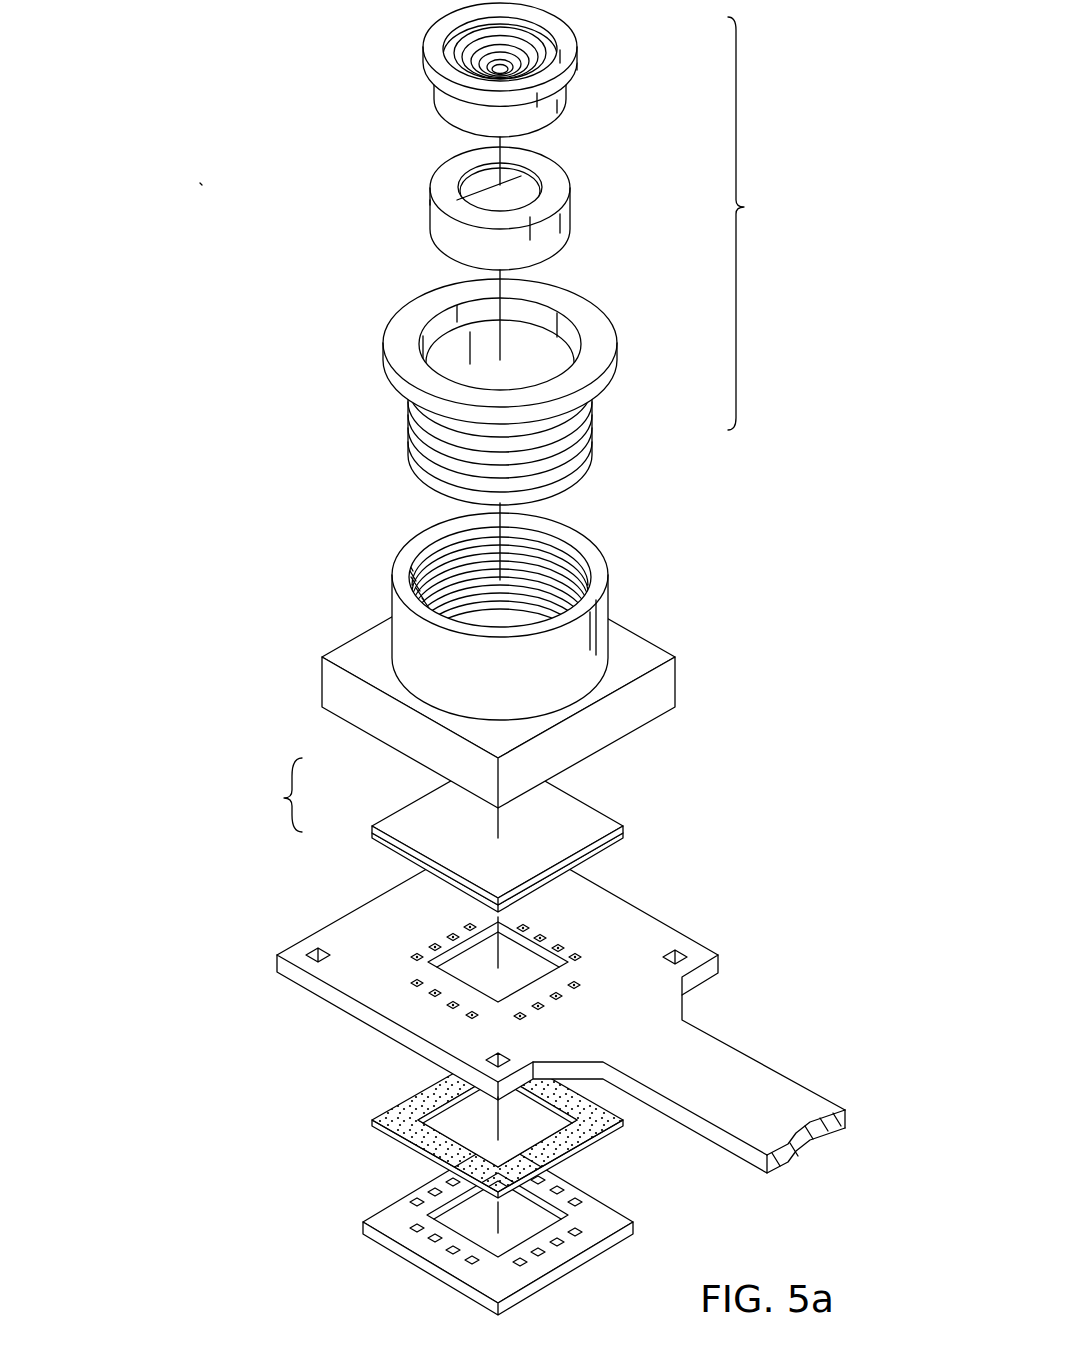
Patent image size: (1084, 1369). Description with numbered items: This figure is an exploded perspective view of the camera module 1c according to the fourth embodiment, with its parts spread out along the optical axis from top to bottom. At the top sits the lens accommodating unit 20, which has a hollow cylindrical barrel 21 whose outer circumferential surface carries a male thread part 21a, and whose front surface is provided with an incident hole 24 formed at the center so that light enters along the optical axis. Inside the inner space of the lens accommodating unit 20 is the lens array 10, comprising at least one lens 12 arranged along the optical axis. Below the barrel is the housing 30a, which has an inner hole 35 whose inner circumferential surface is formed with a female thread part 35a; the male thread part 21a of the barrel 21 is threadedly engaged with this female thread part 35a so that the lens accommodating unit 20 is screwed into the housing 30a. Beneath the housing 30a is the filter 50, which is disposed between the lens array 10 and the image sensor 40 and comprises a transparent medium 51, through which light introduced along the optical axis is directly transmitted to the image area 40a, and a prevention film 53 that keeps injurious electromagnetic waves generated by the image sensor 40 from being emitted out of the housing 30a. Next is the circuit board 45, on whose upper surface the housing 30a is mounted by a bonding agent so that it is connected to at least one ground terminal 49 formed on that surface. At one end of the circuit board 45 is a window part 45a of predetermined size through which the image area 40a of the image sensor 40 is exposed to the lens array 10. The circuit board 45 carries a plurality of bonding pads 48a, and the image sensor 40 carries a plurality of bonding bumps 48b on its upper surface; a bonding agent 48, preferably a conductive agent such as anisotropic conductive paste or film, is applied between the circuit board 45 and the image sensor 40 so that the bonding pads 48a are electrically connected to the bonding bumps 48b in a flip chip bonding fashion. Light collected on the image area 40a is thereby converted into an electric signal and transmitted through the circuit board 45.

The camera module 1c is at (201, 184).
The lens array 10 is at (400, 195).
The lens 12 is at (566, 210).
The lens accommodating unit 20 is at (744, 207).
The barrel 21 is at (617, 372).
The male thread part 21a is at (592, 436).
The incident hole 24 is at (549, 29).
The housing 30a is at (605, 598).
The inner hole 35 is at (567, 574).
The female thread part 35a is at (410, 571).
The image sensor 40 is at (428, 1259).
The image area 40a is at (578, 1203).
The circuit board 45 is at (627, 928).
The window part 45a is at (447, 945).
The bonding agent 48 is at (593, 1135).
The bonding pads 48a is at (448, 1007).
The bonding bumps 48b is at (410, 1228).
The ground terminal 49 is at (312, 952).
The filter 50 is at (284, 798).
The transparent medium 51 is at (372, 836).
The prevention film 53 is at (417, 808).